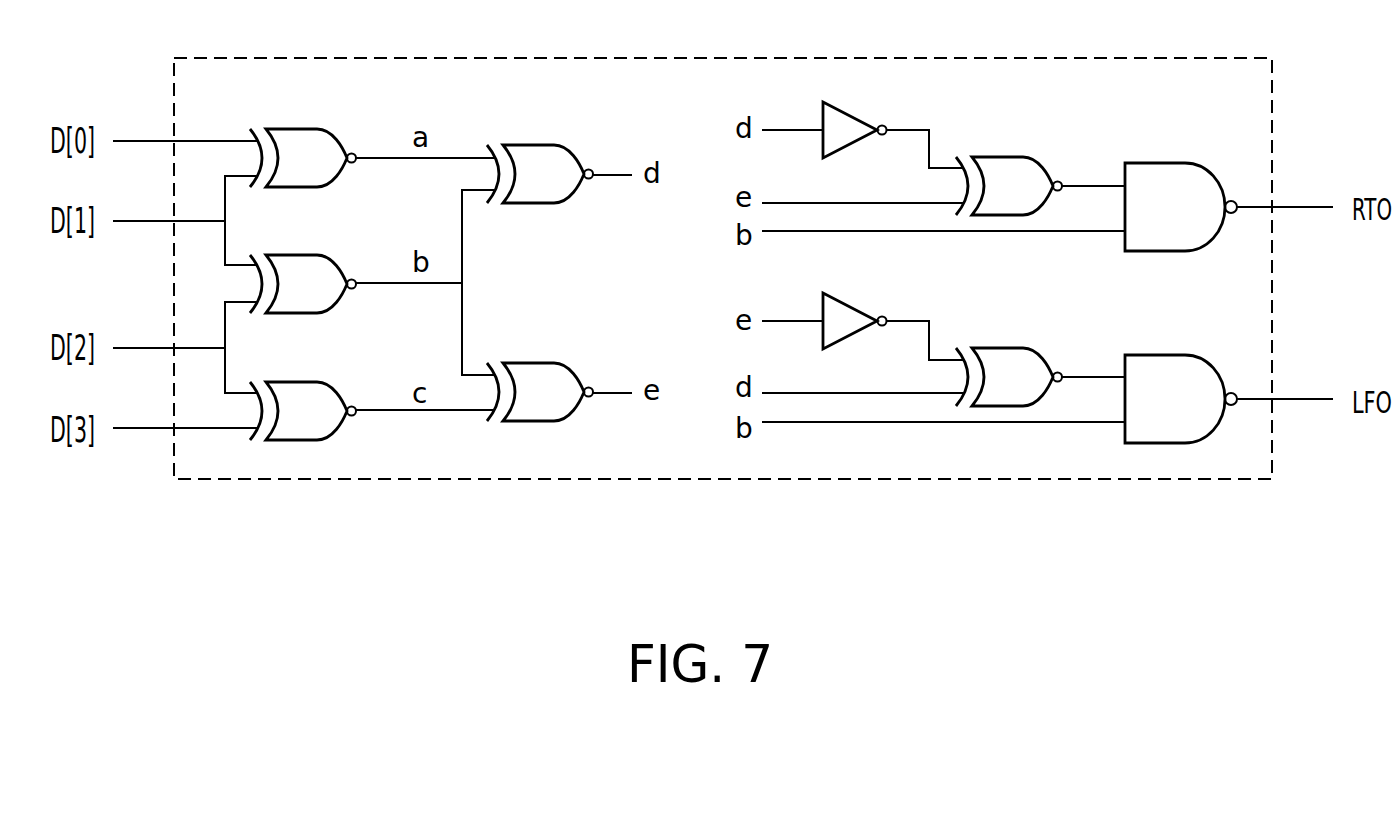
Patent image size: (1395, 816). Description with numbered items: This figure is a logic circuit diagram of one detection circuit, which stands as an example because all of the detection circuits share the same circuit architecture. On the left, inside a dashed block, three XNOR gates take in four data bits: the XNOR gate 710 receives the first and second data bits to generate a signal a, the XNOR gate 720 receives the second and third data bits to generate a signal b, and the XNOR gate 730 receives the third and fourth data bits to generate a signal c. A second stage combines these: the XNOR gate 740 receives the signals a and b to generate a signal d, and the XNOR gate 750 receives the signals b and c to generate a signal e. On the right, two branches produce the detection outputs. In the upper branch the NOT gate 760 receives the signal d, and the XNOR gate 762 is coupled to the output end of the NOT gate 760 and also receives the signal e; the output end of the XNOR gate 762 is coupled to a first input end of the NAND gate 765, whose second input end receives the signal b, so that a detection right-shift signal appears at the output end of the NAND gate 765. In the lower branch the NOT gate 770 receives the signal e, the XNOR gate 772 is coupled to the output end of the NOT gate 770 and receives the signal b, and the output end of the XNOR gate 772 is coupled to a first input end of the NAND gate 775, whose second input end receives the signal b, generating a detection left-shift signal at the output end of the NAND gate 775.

The XNOR gate 710 is at (307, 130).
The XNOR gate 720 is at (307, 255).
The XNOR gate 730 is at (307, 382).
The XNOR gate 740 is at (542, 145).
The XNOR gate 750 is at (542, 363).
The NOT gate 760 is at (852, 112).
The XNOR gate 762 is at (1012, 157).
The NAND gate 765 is at (1163, 163).
The NOT gate 770 is at (852, 303).
The XNOR gate 772 is at (1012, 348).
The NAND gate 775 is at (1163, 355).